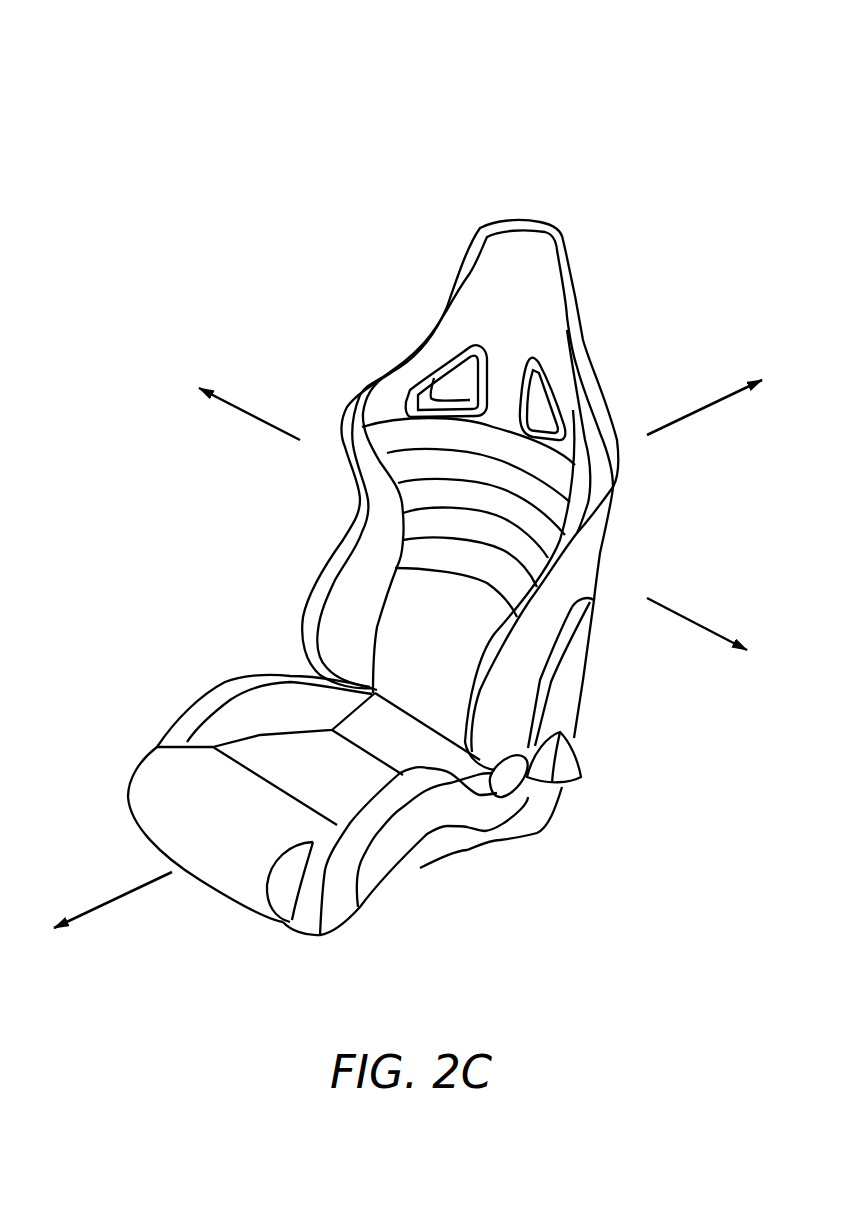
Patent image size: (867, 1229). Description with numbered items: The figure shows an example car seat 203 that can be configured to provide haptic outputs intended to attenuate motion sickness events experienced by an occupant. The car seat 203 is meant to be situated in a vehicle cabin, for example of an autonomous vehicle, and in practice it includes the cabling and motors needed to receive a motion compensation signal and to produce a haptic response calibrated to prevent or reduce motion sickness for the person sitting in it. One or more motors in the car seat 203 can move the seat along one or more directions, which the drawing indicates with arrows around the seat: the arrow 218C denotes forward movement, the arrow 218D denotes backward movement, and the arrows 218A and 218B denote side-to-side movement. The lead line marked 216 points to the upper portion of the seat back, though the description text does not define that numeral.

The car seat 203 is at (655, 76).
The seat back 216 is at (535, 228).
The direction vector 218A is at (262, 418).
The direction vector 218B is at (688, 618).
The direction vector 218C is at (88, 908).
The direction vector 218D is at (697, 408).